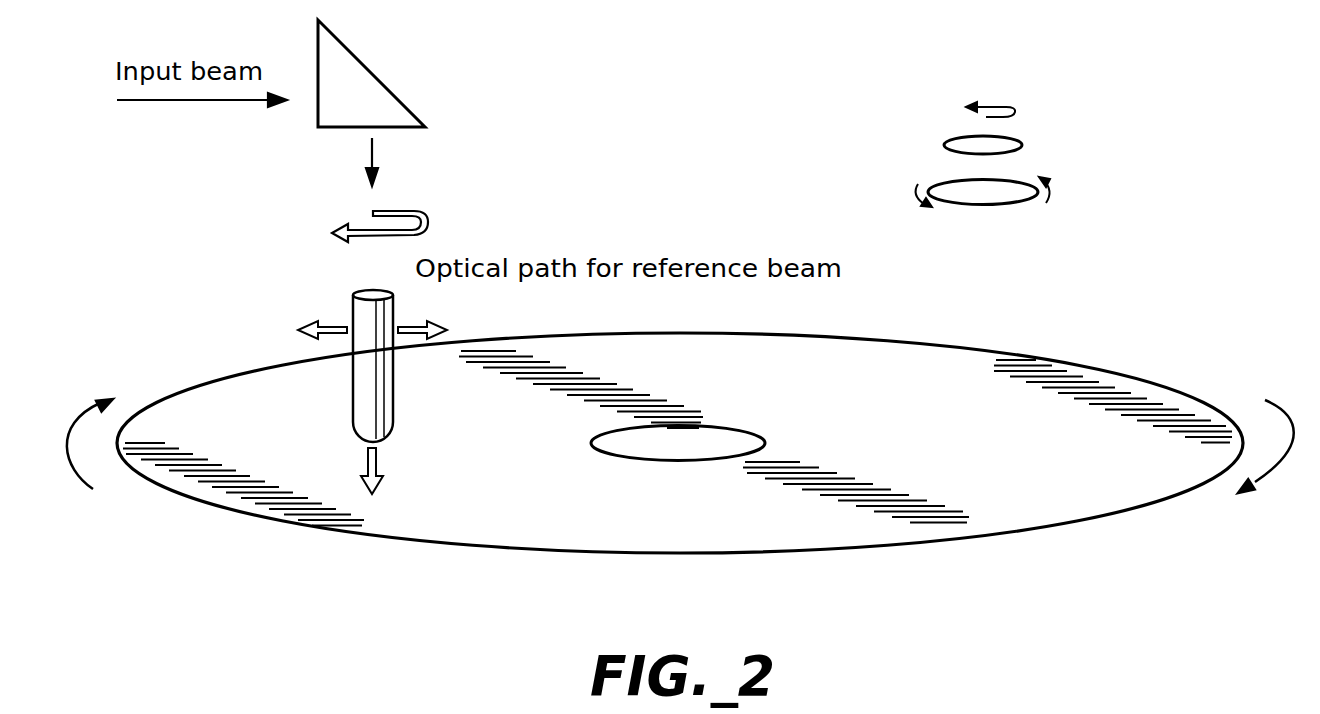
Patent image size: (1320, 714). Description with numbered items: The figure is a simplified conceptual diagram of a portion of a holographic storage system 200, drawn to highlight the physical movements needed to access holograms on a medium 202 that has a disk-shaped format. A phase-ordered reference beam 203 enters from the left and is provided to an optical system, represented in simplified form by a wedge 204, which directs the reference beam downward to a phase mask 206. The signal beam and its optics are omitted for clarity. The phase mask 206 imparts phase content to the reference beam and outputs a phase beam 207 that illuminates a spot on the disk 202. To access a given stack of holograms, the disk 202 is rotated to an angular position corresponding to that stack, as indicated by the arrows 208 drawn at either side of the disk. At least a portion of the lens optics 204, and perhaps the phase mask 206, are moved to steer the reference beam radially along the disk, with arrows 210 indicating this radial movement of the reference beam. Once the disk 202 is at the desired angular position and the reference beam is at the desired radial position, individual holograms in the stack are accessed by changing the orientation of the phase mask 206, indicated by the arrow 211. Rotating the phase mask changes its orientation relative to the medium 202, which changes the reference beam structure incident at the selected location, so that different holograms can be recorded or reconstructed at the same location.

The holographic storage system 200 is at (635, 224).
The medium 202 is at (993, 345).
The phase-ordered reference beam 203 is at (132, 101).
The wedge 204 is at (402, 100).
The phase mask 206 is at (353, 318).
The phase beam 207 is at (378, 460).
The arrows indicating disk rotation 208 is at (65, 427).
The arrows indicating radial movement of the reference beam 210 is at (410, 318).
The arrow indicating phase mask rotation 211 is at (425, 229).